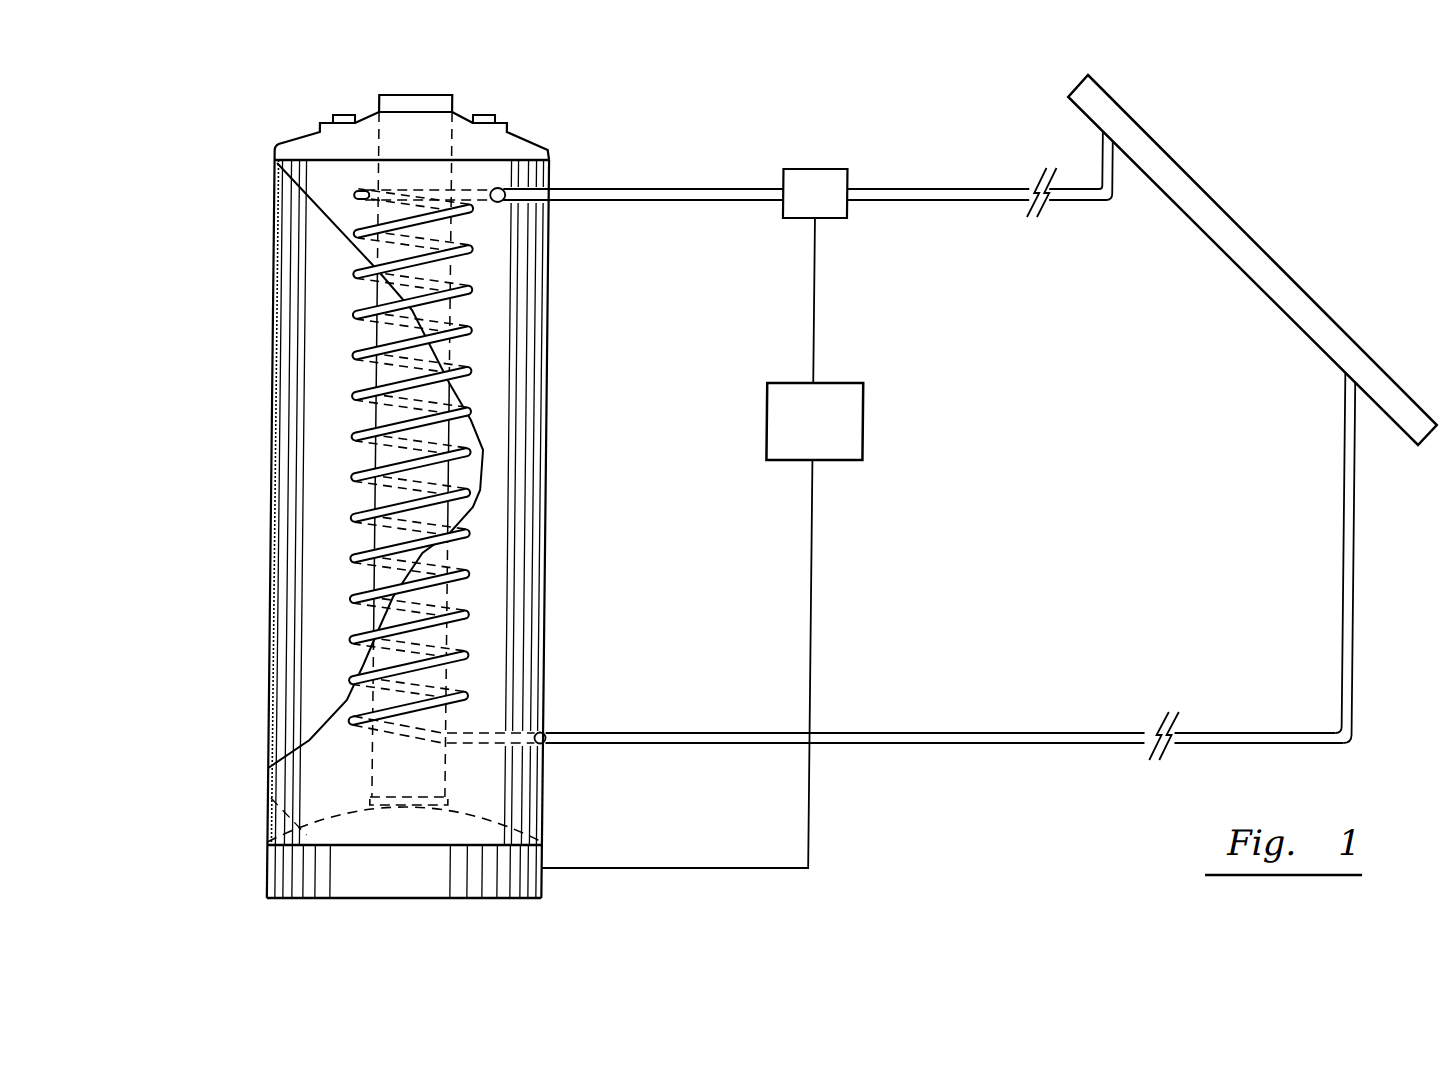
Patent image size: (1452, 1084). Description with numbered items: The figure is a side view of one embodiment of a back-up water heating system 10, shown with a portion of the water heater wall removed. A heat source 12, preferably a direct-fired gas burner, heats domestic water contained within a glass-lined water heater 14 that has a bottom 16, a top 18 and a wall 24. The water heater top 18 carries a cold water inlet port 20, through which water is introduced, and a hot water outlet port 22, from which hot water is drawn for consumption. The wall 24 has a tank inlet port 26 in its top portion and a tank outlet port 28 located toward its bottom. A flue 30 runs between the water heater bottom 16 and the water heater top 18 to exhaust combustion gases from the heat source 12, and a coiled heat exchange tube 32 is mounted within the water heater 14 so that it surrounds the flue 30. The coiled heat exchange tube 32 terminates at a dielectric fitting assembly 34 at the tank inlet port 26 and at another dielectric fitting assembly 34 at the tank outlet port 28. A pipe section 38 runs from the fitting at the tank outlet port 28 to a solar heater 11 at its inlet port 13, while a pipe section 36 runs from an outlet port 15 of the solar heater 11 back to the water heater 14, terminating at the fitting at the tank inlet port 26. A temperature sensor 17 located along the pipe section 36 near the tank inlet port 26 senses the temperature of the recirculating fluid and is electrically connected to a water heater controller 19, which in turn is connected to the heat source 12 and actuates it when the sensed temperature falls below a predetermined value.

The back-up water heating system 10 is at (401, 488).
The solar heater 11 is at (1268, 239).
The heat source 12 is at (266, 870).
The inlet port 13 is at (1343, 374).
The water heater 14 is at (549, 436).
The outlet port 15 is at (1097, 131).
The water heater bottom 16 is at (271, 797).
The temperature sensor 17 is at (828, 168).
The water heater top 18 is at (281, 144).
The water heater controller 19 is at (863, 418).
The cold water inlet port 20 is at (493, 113).
The hot water outlet port 22 is at (328, 113).
The wall 24 is at (331, 409).
The tank inlet port 26 is at (497, 203).
The tank outlet port 28 is at (550, 747).
The flue 30 is at (332, 455).
The coiled heat exchange tube 32 is at (350, 599).
The dielectric fitting assembly 34 is at (497, 189).
The pipe section 36 is at (898, 201).
The pipe section 38 is at (882, 733).